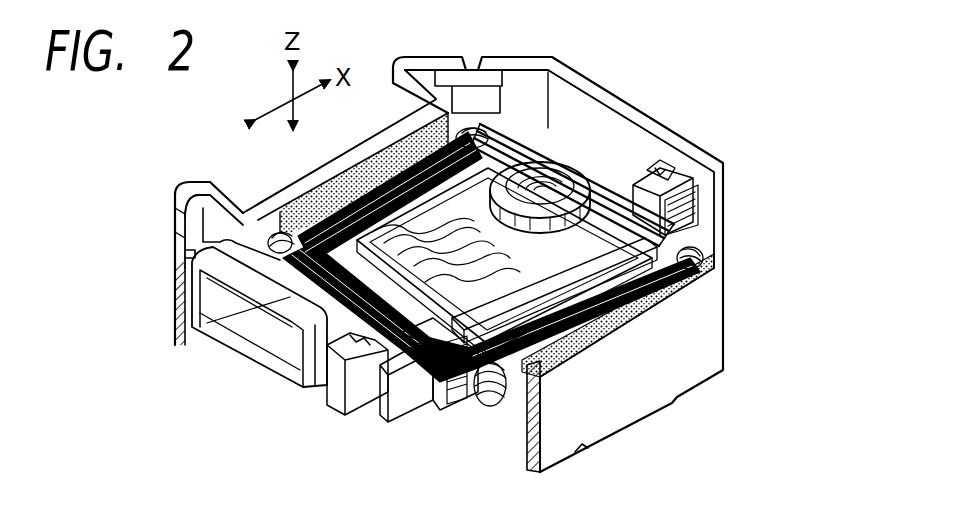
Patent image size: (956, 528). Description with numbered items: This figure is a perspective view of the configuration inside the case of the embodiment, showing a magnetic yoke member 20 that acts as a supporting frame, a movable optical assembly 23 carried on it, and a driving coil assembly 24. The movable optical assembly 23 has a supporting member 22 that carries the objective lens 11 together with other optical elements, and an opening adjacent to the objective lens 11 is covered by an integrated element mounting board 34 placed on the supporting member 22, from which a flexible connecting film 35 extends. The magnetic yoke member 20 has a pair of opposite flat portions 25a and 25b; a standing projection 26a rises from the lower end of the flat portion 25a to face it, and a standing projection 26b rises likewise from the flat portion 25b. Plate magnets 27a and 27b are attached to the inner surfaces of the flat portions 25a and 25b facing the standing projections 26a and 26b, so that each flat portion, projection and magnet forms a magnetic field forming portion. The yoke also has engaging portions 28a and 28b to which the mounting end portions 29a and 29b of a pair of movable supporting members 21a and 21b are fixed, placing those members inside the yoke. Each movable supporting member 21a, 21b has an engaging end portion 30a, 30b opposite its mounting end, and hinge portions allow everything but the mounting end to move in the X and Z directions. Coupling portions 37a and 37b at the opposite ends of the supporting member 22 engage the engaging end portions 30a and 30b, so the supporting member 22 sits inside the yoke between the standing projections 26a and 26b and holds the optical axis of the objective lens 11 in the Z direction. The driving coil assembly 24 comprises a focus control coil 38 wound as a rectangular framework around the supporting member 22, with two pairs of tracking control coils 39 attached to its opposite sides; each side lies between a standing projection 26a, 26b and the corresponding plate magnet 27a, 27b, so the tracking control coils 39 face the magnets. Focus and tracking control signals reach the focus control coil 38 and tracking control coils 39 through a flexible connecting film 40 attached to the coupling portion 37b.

The objective lens 11 is at (557, 178).
The magnetic yoke member 20 is at (608, 452).
The movable supporting member 21a is at (228, 232).
The movable supporting member 21b is at (612, 96).
The supporting member 22 is at (637, 135).
The movable optical assembly 23 is at (726, 94).
The driving coil assembly 24 is at (608, 102).
The flat portion 25a is at (680, 372).
The flat portion 25b is at (292, 198).
The standing projection 26a is at (543, 282).
The standing projection 26b is at (549, 142).
The plate magnet 27a is at (522, 432).
The plate magnet 27b is at (410, 133).
The engaging portion 28a is at (180, 238).
The engaging portion 28b is at (497, 58).
The mounting end portion 29a is at (192, 216).
The mounting end portion 29b is at (452, 68).
The engaging end portion 30a is at (374, 395).
The engaging end portion 30b is at (694, 190).
The integrated element mounting board 34 is at (456, 408).
The flexible connecting film 35 is at (363, 418).
The coupling portion 37a is at (330, 392).
The coupling portion 37b is at (666, 160).
The focus control coil 38 is at (258, 352).
The tracking control coils 39 is at (386, 146).
The flexible connecting film 40 is at (698, 212).